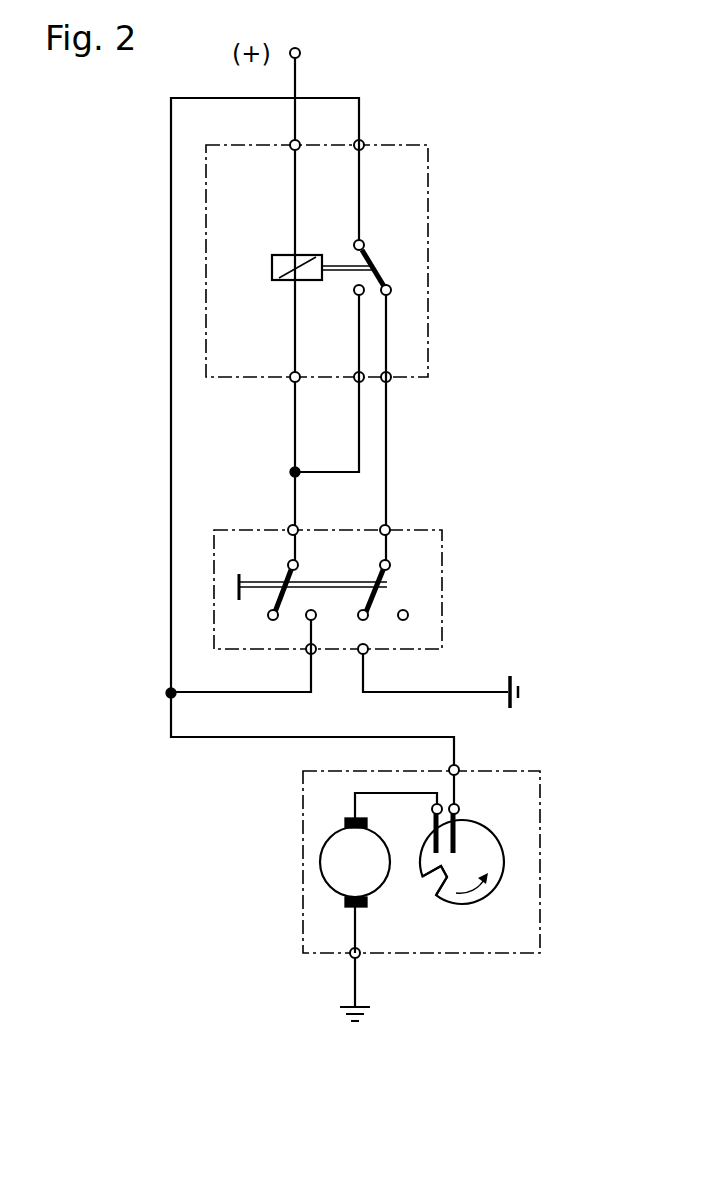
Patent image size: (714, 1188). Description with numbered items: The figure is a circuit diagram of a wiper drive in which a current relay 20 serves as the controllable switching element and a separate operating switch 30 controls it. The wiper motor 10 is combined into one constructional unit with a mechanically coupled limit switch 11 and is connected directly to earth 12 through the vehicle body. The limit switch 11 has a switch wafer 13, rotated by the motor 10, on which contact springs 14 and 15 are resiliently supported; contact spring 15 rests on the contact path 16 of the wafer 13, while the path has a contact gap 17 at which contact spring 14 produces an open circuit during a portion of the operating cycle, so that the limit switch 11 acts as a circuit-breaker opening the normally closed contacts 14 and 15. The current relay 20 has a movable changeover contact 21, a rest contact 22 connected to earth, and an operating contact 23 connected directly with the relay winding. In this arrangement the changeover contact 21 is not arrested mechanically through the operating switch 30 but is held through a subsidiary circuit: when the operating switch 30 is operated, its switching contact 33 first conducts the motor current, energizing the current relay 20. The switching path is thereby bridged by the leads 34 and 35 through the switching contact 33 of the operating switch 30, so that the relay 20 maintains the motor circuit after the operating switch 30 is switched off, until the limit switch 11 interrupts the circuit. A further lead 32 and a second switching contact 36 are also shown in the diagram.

The wiper motor 10 is at (322, 872).
The limit switch 11 is at (453, 922).
The earth 12 is at (508, 688).
The switch wafer 13 is at (503, 848).
The contact spring 14 is at (434, 822).
The contact spring 15 is at (457, 822).
The contact path 16 is at (480, 877).
The contact gap 17 is at (441, 878).
The current relay 20 is at (283, 264).
The movable changeover contact 21 is at (366, 252).
The rest contact 22 is at (391, 295).
The operating contact 23 is at (354, 292).
The operating switch 30 is at (428, 552).
The lead 32 is at (331, 738).
The switching contact 33 is at (285, 581).
The lead 34 is at (266, 692).
The lead 35 is at (171, 290).
The switch contact 36 is at (380, 576).